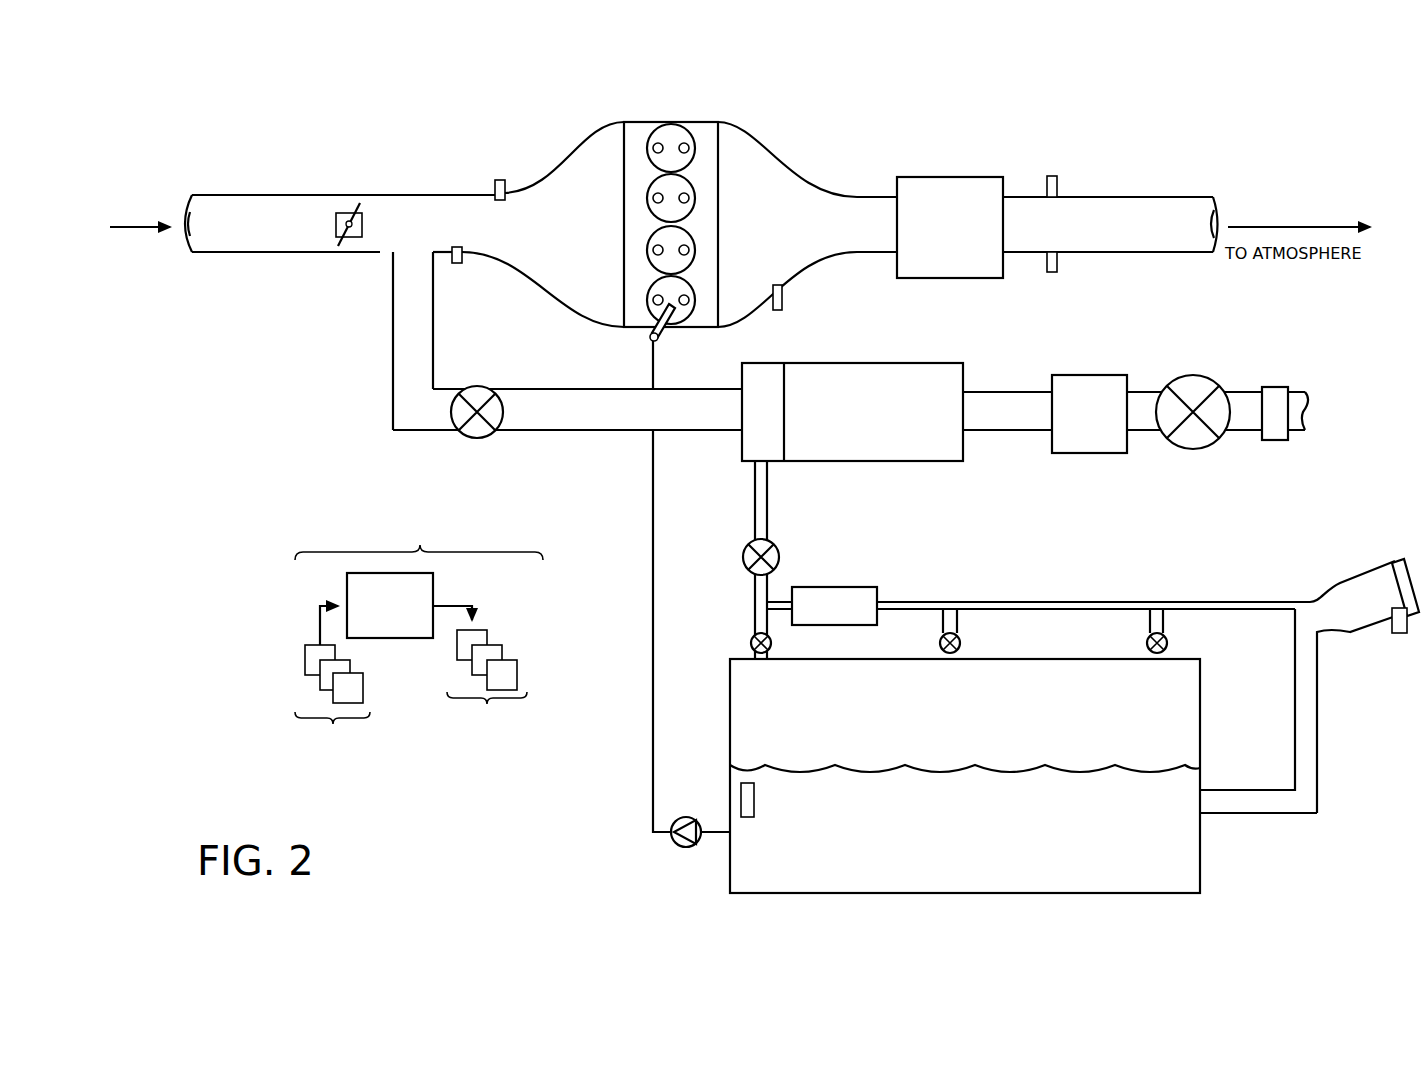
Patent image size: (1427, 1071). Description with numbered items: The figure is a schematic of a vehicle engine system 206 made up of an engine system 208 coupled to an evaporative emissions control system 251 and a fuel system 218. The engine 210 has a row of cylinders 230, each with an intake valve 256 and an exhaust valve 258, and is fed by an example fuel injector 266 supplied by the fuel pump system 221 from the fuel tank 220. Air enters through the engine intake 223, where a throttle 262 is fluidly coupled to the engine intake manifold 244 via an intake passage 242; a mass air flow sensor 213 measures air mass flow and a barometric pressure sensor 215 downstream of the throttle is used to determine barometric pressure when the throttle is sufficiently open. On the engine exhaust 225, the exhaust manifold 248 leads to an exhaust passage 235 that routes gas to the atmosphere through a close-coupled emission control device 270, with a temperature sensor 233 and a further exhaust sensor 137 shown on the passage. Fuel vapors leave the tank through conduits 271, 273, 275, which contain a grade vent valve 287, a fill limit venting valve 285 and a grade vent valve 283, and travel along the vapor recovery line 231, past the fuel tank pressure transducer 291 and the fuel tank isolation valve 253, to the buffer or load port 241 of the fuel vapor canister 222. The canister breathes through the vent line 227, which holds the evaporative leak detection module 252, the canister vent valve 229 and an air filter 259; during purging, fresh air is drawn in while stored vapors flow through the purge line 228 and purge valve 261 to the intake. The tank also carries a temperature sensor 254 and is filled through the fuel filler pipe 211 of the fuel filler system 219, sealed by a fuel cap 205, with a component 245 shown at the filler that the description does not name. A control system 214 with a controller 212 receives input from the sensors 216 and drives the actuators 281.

The vehicle engine system 206 is at (203, 124).
The throttle 262 is at (362, 233).
The intake passage 242 is at (380, 254).
The mass air flow sensor 213 is at (495, 192).
The barometric pressure sensor 215 is at (458, 268).
The engine intake manifold 244 is at (600, 223).
The engine intake 223 is at (549, 146).
The engine 210 is at (718, 207).
The cylinders 230 is at (688, 147).
The intake valve 256 is at (658, 140).
The exhaust valve 258 is at (684, 142).
The fuel injector 266 is at (663, 333).
The exhaust manifold 248 is at (805, 233).
The engine exhaust 225 is at (887, 130).
The engine system 208 is at (1015, 120).
The vapor recovery line 231 is at (782, 287).
The emission control device 270 is at (936, 177).
The exhaust gas sensor 137 is at (1047, 188).
The temperature sensor 233 is at (1047, 257).
The exhaust passage 235 is at (1167, 196).
The purge line 228 is at (595, 421).
The purge valve 261 is at (478, 388).
The fuel pump system 221 is at (688, 817).
The fuel vapor canister 222 is at (965, 381).
The buffer or load port 241 is at (760, 363).
The vent line 227 is at (1010, 418).
The evaporative leak detection module 252 is at (1089, 414).
The canister vent valve 229 is at (1190, 375).
The air filter 259 is at (1282, 388).
The evaporative emissions control system 251 is at (1105, 343).
The fuel tank isolation valve 253 is at (778, 549).
The actuators 281 is at (1218, 600).
The fuel tank pressure transducer 291 is at (835, 587).
The conduit 271 is at (771, 622).
The grade vent valve 287 is at (749, 643).
The conduit 273 is at (943, 614).
The fill limit venting valve 285 is at (962, 642).
The conduit 275 is at (1150, 617).
The grade vent valve 283 is at (1187, 627).
The fuel tank 220 is at (1200, 757).
The fuel system 218 is at (1249, 856).
The temperature sensor 254 is at (740, 792).
The fuel filler pipe 211 is at (1318, 707).
The fuel filler system 219 is at (1367, 556).
The fuel cap 205 is at (1401, 560).
The refueling lock 245 is at (1398, 638).
The control system 214 is at (419, 532).
The controller 212 is at (396, 609).
The sensors 216 is at (332, 705).